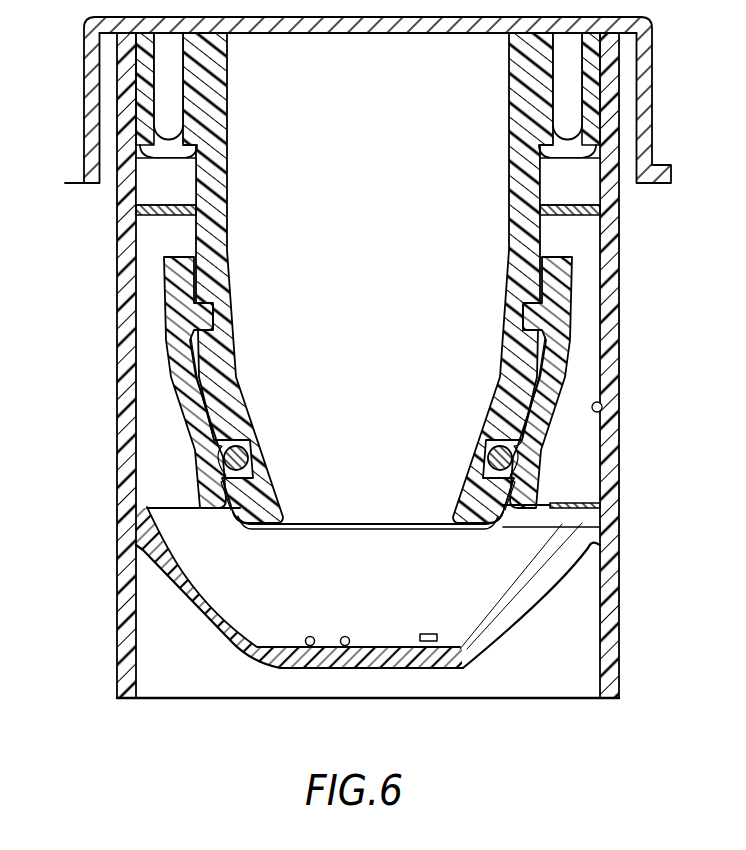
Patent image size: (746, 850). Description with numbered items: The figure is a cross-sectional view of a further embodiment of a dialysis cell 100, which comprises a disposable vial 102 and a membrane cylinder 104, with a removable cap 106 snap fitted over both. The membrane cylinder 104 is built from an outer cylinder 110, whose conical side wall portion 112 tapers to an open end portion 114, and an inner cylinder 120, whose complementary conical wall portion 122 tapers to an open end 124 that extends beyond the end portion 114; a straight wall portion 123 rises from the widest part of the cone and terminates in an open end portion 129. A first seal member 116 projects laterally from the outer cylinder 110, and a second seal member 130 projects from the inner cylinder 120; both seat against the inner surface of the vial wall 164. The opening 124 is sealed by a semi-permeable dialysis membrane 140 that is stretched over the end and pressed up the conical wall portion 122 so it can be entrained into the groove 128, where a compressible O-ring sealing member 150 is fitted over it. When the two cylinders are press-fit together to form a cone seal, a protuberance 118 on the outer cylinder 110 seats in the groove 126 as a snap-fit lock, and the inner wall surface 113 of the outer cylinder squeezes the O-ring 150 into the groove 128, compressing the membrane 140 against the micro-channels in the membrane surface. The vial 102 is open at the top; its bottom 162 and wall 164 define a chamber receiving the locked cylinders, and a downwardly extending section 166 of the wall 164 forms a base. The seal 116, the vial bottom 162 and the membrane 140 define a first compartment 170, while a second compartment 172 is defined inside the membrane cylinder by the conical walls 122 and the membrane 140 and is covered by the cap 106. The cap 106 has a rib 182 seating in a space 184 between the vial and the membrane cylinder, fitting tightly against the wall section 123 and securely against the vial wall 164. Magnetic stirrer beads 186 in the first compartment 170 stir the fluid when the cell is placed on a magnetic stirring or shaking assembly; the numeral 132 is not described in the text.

The cell 100 is at (103, 365).
The disposable vial 102 is at (112, 545).
The membrane cylinder 104 is at (189, 238).
The removable cap 106 is at (82, 49).
The outer cylinder 110 is at (583, 281).
The conical side wall portion 112 is at (570, 375).
The inner wall surface 113 is at (522, 447).
The open end portion 114 is at (561, 511).
The first seal member 116 is at (586, 511).
The protuberance 118 is at (573, 335).
The inner cylinder 120 is at (549, 229).
The conical wall portion 122 is at (500, 400).
The straight wall portion 123 is at (507, 123).
The open end 124 is at (376, 519).
The circumferential groove 126 is at (536, 303).
The circumferential groove 128 is at (487, 448).
The open end portion 129 is at (413, 40).
The second seal member 130 is at (598, 209).
The liner fold 132 is at (471, 468).
The semi-permeable dialysis membrane 140 is at (481, 533).
The compressible O-ring sealing member 150 is at (573, 468).
The vial bottom 162 is at (395, 642).
The vial wall 164 is at (603, 407).
The downwardly extending section 166 is at (621, 578).
The first compartment 170 is at (382, 589).
The second compartment 172 is at (382, 318).
The rib 182 is at (196, 158).
The space 184 is at (182, 195).
The magnetic stirrer beads 186 is at (425, 643).